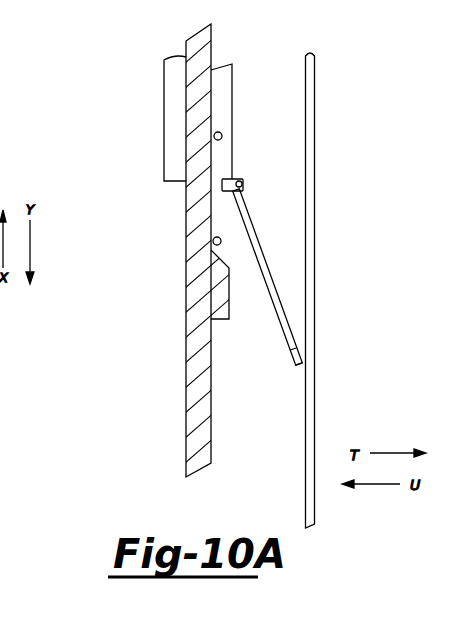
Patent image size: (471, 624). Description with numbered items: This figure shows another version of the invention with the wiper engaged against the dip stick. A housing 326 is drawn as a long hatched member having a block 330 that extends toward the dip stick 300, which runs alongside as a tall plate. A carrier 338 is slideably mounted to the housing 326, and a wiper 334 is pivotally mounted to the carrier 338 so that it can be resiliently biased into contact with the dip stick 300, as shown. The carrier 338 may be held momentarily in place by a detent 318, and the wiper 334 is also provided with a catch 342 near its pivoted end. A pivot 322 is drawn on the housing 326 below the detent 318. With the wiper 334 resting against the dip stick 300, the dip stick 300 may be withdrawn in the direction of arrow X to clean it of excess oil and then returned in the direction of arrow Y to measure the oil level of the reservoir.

The dip stick 300 is at (316, 124).
The detent 318 is at (222, 134).
The pivot pin 322 is at (213, 241).
The housing 326 is at (188, 455).
The block 330 is at (229, 280).
The wiper 334 is at (285, 298).
The carrier 338 is at (164, 78).
The catch 342 is at (226, 178).